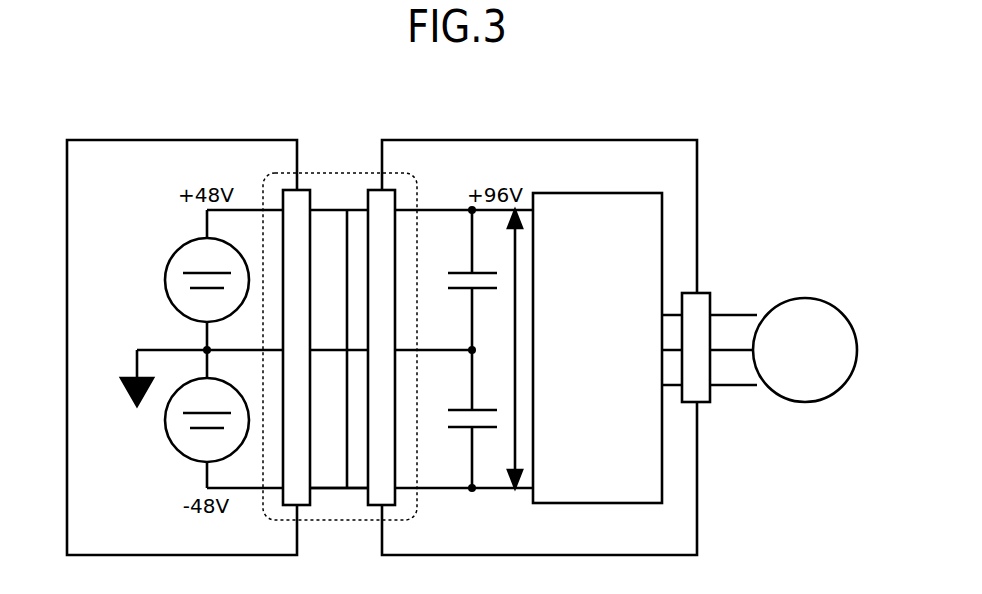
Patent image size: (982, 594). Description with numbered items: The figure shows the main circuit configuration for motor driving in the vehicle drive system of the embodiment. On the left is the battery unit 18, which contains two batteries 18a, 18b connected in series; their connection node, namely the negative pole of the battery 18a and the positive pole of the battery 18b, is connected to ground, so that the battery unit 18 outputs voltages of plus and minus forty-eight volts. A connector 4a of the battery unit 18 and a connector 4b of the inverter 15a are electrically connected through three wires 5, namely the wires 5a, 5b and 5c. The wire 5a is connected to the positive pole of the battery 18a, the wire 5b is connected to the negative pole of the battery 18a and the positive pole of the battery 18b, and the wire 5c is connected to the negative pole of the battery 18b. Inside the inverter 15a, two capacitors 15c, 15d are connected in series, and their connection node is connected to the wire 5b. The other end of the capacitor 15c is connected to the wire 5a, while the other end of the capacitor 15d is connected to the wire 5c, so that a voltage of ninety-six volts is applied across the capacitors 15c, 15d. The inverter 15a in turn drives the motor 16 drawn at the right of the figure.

The battery unit 18 is at (108, 140).
The battery 18a is at (168, 270).
The battery 18b is at (170, 434).
The connector 4a is at (305, 190).
The connector 4b is at (375, 190).
The wires 5 is at (337, 190).
The wire 5a is at (327, 211).
The wire 5b is at (334, 351).
The wire 5c is at (323, 489).
The inverter 15a is at (620, 140).
The capacitor 15c is at (466, 273).
The capacitor 15d is at (466, 410).
The motor 16 is at (801, 298).